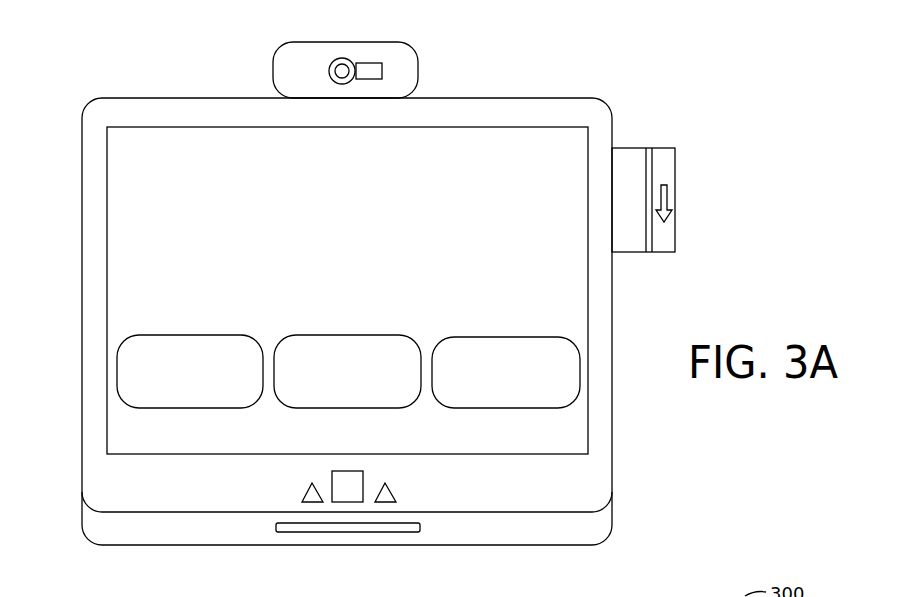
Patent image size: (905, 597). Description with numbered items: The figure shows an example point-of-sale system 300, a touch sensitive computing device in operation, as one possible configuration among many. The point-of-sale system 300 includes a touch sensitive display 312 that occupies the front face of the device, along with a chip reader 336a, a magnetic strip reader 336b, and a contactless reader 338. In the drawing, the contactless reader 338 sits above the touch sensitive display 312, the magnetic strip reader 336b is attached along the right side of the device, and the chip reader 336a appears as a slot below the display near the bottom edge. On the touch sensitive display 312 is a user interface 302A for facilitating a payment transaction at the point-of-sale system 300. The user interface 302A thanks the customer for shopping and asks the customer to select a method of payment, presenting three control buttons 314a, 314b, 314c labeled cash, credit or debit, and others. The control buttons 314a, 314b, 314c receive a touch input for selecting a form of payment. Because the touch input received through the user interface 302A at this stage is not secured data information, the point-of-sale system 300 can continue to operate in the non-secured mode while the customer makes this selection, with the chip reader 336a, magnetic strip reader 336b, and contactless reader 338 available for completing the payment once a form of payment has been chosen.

The point-of-sale system 300 is at (537, 58).
The user interface 302A is at (127, 141).
The touch sensitive display 312 is at (464, 118).
The control button 314a is at (172, 335).
The control button 314b is at (337, 335).
The control button 314c is at (497, 337).
The chip reader 336a is at (280, 538).
The magnetic strip reader 336b is at (630, 148).
The contactless reader 338 is at (418, 62).